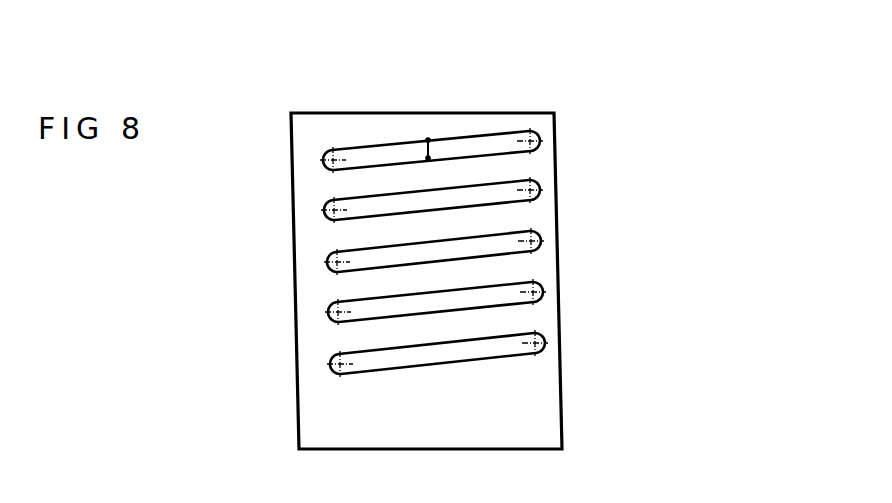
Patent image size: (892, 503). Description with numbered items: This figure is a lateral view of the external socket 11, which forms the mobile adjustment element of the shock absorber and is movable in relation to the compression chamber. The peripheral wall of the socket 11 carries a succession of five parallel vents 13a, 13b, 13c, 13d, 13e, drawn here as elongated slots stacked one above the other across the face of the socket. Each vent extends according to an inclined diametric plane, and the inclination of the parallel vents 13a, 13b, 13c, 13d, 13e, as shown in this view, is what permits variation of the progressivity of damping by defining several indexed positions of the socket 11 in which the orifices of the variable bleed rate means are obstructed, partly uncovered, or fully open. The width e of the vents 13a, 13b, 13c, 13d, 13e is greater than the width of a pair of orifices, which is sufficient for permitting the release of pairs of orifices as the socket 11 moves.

The external socket 11 is at (253, 208).
The vent 13a is at (483, 147).
The vent 13b is at (503, 197).
The vent 13c is at (503, 243).
The vent 13d is at (507, 295).
The vent 13e is at (477, 348).
The width of the vents e is at (432, 149).